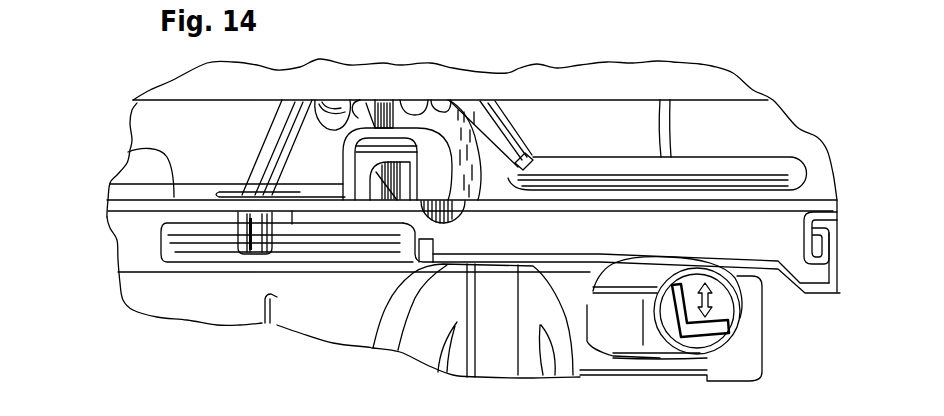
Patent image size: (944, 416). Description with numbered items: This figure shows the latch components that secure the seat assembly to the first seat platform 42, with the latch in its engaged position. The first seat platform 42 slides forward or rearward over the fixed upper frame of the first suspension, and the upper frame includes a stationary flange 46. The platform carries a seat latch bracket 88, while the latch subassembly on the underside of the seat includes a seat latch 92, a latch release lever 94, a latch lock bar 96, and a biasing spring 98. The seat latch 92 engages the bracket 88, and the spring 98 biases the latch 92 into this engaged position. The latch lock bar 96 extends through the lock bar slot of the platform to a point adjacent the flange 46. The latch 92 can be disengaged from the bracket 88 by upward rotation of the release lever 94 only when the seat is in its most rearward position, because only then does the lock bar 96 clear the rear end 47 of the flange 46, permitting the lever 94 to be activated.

The first seat platform 42 is at (128, 152).
The stationary flange 46 is at (350, 248).
The rear end of flange 47 is at (166, 254).
The seat latch bracket 88 is at (390, 143).
The seat latch 92 is at (470, 185).
The latch release lever 94 is at (733, 173).
The latch lock bar 96 is at (252, 250).
The biasing spring 98 is at (325, 115).